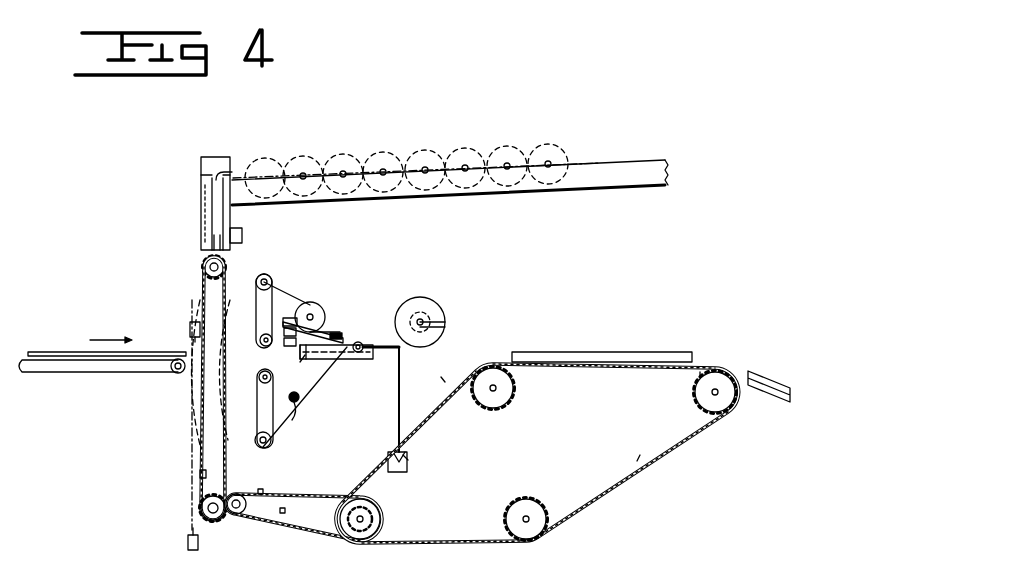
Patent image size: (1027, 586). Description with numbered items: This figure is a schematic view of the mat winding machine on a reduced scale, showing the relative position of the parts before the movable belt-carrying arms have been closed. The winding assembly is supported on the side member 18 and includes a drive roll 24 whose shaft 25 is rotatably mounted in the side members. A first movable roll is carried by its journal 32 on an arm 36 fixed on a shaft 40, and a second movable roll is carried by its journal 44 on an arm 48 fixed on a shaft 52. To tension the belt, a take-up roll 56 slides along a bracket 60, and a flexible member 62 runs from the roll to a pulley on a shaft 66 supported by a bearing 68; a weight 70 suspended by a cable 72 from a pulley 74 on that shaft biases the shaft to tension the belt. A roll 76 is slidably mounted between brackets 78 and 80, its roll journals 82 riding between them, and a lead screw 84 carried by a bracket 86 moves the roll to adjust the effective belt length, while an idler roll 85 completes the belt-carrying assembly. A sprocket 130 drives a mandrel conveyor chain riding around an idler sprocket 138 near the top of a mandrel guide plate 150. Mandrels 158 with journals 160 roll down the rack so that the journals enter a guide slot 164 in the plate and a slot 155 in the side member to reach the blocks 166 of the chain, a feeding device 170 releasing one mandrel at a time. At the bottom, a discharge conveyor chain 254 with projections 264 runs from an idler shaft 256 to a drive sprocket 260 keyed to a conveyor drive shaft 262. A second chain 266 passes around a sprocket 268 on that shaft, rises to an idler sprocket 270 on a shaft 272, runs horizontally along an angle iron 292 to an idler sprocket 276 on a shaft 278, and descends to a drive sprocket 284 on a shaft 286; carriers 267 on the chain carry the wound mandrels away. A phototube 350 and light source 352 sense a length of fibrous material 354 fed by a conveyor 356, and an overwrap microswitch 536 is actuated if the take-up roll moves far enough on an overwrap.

The side member 18 is at (205, 225).
The drive roll 24 is at (312, 312).
The shaft 25 is at (312, 322).
The journal 32 is at (270, 278).
The arm 36 is at (262, 320).
The shaft 40 is at (262, 345).
The journal 44 is at (263, 448).
The arm 48 is at (262, 410).
The shaft 52 is at (262, 378).
The roll 56 is at (345, 357).
The bracket 60 is at (360, 358).
The flexible member 62 is at (376, 340).
The shaft 66 is at (447, 325).
The bearing 68 is at (435, 318).
The weight 70 is at (407, 462).
The cable 72 is at (401, 386).
The pulley 74 is at (436, 312).
The roll 76 is at (297, 387).
The bracket 78 is at (283, 311).
The bracket 80 is at (284, 356).
The roll journal 82 is at (277, 345).
The lead screw 84 is at (330, 328).
The idler roll 85 is at (283, 413).
The bracket 86 is at (345, 335).
The sprocket 130 is at (200, 508).
The idler sprocket 138 is at (204, 268).
The mandrel guide plate 150 is at (202, 210).
The slot 155 is at (210, 247).
The mandrel 158 is at (395, 150).
The journal 160 is at (470, 165).
The guide slot 164 is at (212, 186).
The block 166 is at (200, 357).
The feeding device 170 is at (245, 235).
The chain 254 is at (320, 540).
The idler shaft 256 is at (240, 515).
The drive sprocket 260 is at (360, 535).
The conveyor drive shaft 262 is at (363, 516).
The projection 264 is at (268, 495).
The chain 266 is at (660, 455).
The carrier 267 is at (573, 363).
The sprocket 268 is at (385, 520).
The idler sprocket 270 is at (515, 390).
The shaft 272 is at (493, 392).
The idler sprocket 276 is at (728, 380).
The shaft 278 is at (700, 400).
The drive sprocket 284 is at (530, 498).
The shaft 286 is at (540, 528).
The angle iron 292 is at (650, 351).
The phototube 350 is at (192, 322).
The light source 352 is at (188, 545).
The fibrous material 354 is at (55, 350).
The conveyor 356 is at (175, 375).
The overwrap microswitch 536 is at (350, 362).